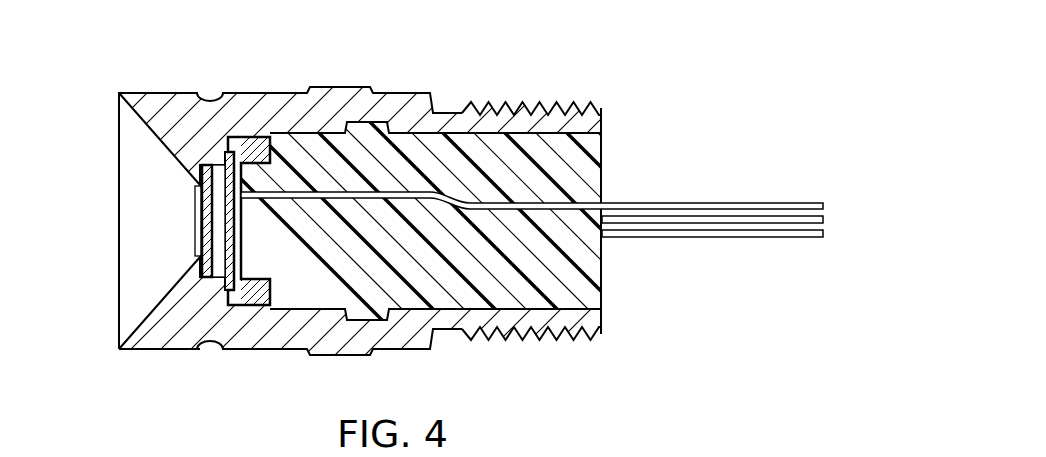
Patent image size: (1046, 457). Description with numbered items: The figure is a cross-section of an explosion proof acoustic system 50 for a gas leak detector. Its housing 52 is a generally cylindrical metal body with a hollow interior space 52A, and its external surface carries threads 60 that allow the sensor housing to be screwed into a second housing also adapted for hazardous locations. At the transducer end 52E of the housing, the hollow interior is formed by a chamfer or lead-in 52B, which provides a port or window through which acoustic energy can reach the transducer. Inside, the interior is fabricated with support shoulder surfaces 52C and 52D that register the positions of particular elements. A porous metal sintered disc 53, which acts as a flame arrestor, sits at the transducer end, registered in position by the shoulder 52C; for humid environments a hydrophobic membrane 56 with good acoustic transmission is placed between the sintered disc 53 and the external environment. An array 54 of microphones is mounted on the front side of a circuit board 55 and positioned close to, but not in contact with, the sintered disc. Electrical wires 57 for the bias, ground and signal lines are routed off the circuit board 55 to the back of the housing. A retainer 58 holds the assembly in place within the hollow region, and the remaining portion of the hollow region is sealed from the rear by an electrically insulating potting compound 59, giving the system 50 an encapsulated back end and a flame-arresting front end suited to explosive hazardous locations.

The explosion proof acoustic system 50 is at (440, 216).
The housing 52 is at (440, 239).
The hollow interior space 52A is at (181, 211).
The chamfer or lead-in 52B is at (158, 327).
The support shoulder surface 52C is at (195, 268).
The support shoulder surface 52D is at (228, 272).
The transducer end 52E is at (115, 298).
The porous metal sintered disc 53 is at (215, 167).
The array of microphones 54 is at (196, 190).
The circuit board 55 is at (199, 240).
The hydrophobic membrane 56 is at (222, 243).
The electrical wires 57 is at (660, 240).
The retainer 58 is at (280, 295).
The electrically insulating potting compound 59 is at (433, 263).
The threads 60 is at (565, 110).